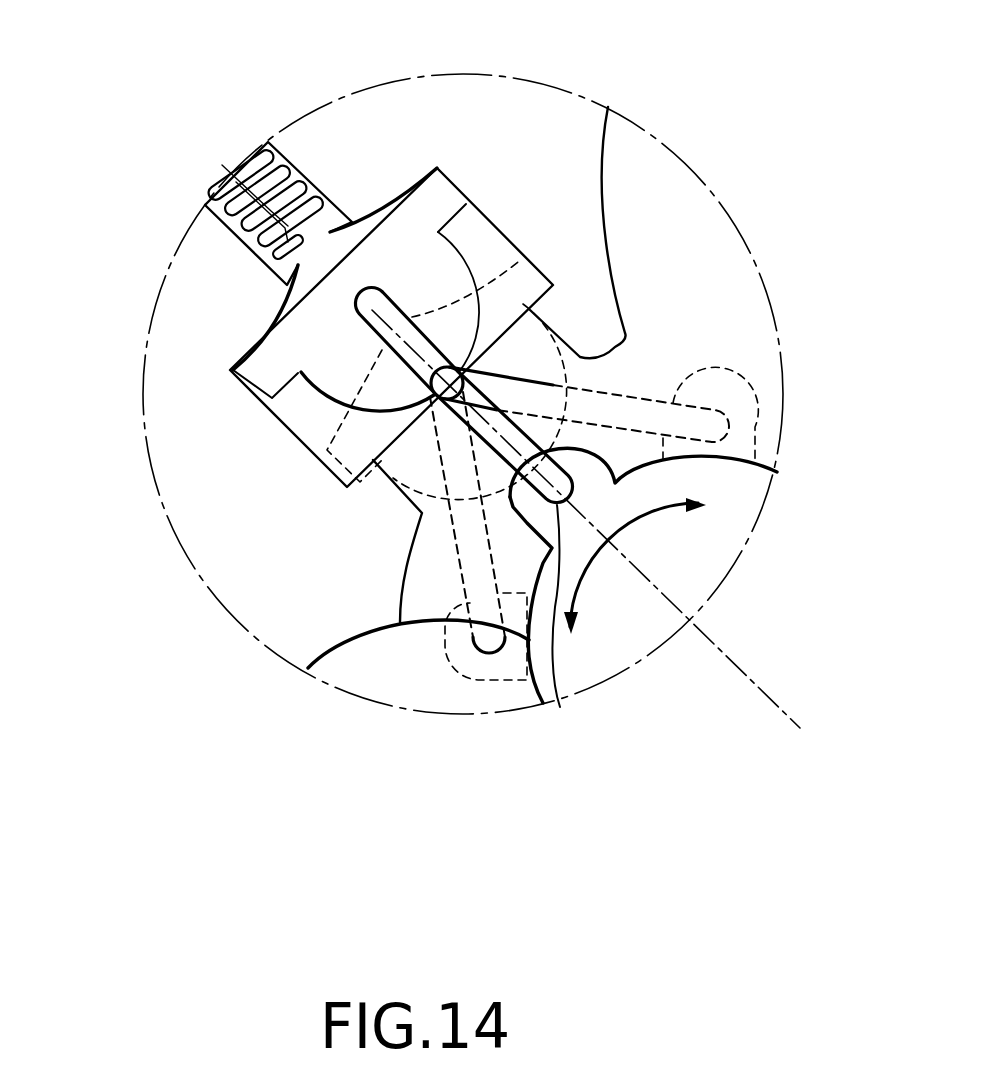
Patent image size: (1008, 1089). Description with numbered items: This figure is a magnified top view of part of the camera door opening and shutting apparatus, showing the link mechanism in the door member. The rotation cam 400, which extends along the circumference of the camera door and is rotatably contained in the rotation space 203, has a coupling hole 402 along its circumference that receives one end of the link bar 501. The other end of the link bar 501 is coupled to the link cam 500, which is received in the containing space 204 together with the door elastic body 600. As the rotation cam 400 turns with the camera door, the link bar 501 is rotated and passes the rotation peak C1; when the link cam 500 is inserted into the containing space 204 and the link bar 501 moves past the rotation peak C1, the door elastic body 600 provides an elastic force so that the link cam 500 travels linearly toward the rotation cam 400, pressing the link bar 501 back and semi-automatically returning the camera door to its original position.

The rotation space 203 is at (678, 222).
The containing space 204 is at (300, 415).
The rotation cam 400 is at (737, 535).
The coupling hole 402 is at (560, 707).
The link cam 500 is at (271, 323).
The link bar 501 is at (372, 292).
The door elastic body 600 is at (240, 183).
The rotation peak C1 is at (782, 703).